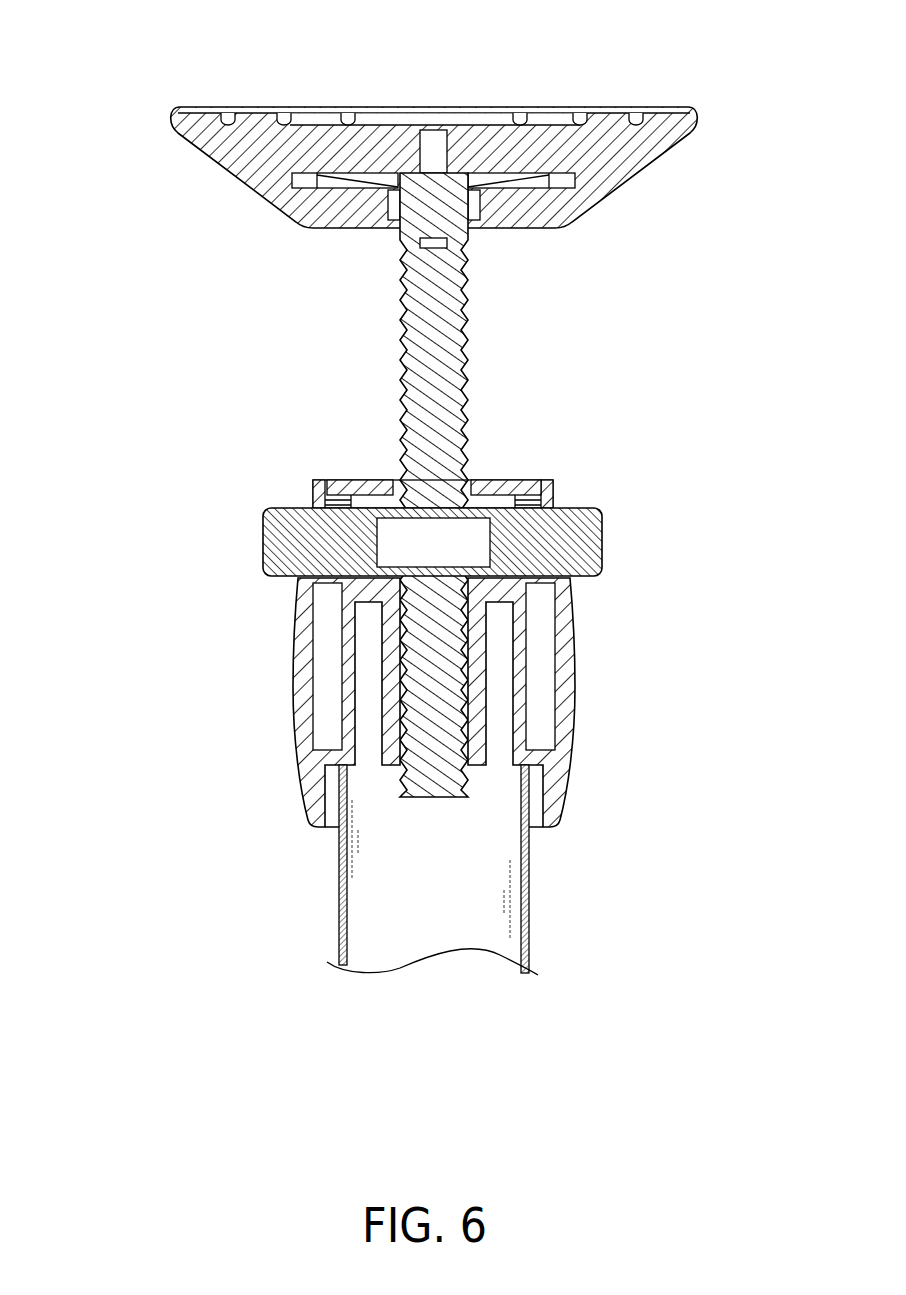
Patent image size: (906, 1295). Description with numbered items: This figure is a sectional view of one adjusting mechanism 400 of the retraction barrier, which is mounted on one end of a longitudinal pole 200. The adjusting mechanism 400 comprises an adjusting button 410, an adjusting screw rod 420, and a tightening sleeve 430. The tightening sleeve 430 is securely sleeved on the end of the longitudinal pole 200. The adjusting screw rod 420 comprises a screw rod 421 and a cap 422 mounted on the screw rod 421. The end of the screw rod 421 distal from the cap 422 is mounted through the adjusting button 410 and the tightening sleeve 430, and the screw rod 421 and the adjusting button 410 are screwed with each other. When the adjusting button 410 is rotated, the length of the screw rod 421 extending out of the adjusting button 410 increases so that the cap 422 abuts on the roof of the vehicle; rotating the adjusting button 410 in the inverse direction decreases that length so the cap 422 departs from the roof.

The adjusting mechanism 400 is at (358, 488).
The adjusting screw rod 420 is at (358, 452).
The cap 422 is at (223, 152).
The screw rod 421 is at (415, 369).
The adjusting button 410 is at (275, 542).
The tightening sleeve 430 is at (300, 652).
The longitudinal pole 200 is at (344, 878).